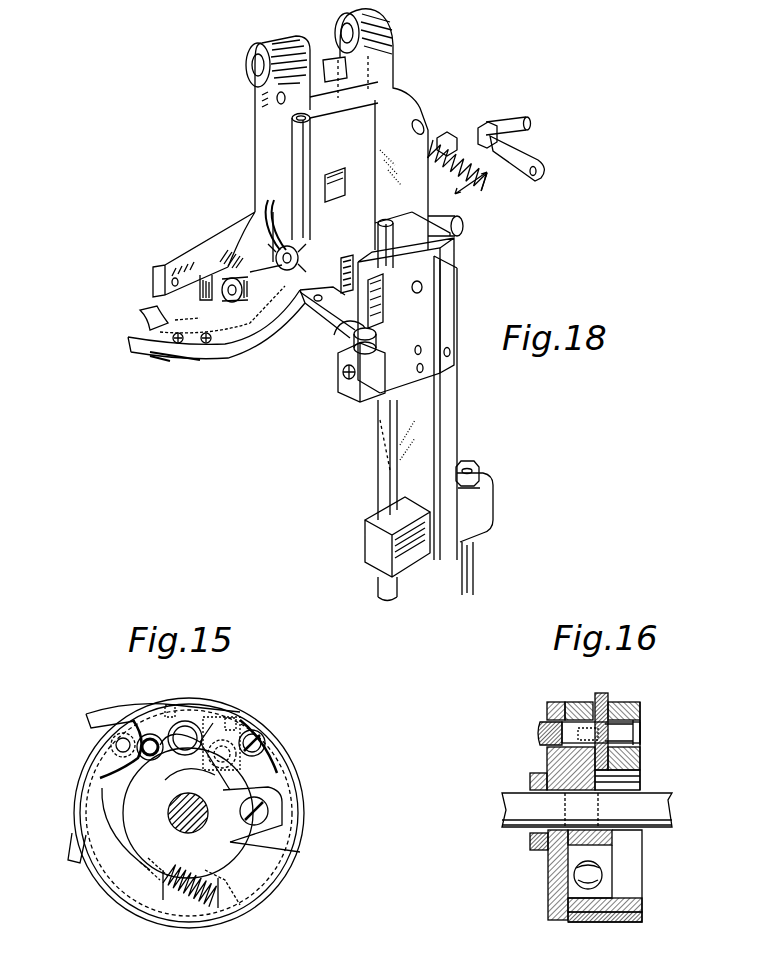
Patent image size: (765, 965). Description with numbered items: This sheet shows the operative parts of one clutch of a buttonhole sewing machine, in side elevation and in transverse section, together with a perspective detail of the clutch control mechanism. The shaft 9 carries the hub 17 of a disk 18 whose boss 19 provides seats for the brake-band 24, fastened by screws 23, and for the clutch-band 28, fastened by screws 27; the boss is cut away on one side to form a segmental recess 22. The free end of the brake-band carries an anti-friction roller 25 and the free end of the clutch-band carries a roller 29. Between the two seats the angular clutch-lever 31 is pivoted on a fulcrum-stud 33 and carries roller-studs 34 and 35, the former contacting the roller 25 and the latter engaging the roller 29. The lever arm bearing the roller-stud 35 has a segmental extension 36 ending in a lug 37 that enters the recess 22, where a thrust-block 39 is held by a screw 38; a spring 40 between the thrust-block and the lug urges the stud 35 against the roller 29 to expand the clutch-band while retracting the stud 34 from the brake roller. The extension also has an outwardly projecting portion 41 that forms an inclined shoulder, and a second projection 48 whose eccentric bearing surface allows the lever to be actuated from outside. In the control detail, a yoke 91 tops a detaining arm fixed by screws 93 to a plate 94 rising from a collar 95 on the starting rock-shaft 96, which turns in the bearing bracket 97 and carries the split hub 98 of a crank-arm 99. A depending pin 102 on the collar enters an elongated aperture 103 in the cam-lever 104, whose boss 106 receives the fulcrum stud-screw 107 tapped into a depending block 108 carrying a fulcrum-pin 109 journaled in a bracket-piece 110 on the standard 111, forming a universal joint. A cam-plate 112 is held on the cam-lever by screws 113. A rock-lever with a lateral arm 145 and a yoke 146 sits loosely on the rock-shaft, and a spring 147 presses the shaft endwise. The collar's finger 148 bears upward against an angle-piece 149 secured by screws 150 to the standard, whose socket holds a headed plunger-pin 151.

In FIG. 15, the shaft 9 is at (170, 806).
In FIG. 16, the shaft 9 is at (668, 800).
In FIG. 16, the hub 17 is at (530, 773).
In FIG. 15, the disk 18 is at (238, 912).
In FIG. 16, the disk 18 is at (550, 920).
In FIG. 15, the boss 19 is at (188, 813).
In FIG. 16, the boss 19 is at (640, 778).
In FIG. 15, the segmental recess 22 is at (190, 880).
In FIG. 15, the screws 23 is at (172, 706).
In FIG. 16, the brake-band 24 is at (590, 922).
In FIG. 15, the anti-friction roller 25 is at (264, 740).
In FIG. 15, the screws 27 is at (232, 716).
In FIG. 16, the clutch-band 28 is at (645, 918).
In FIG. 15, the anti-friction roller 29 is at (112, 745).
In FIG. 15, the clutch-lever 31 is at (170, 758).
In FIG. 15, the fulcrum-stud 33 is at (185, 738).
In FIG. 16, the fulcrum-stud 33 is at (625, 734).
In FIG. 15, the roller-stud 34 is at (232, 760).
In FIG. 15, the roller-stud 35 is at (145, 757).
In FIG. 15, the segmental extension 36 is at (126, 829).
In FIG. 15, the lug 37 is at (150, 866).
In FIG. 15, the screw 38 is at (243, 805).
In FIG. 15, the thrust-block 39 is at (262, 855).
In FIG. 16, the thrust-block 39 is at (589, 865).
In FIG. 15, the spring 40 is at (200, 902).
In FIG. 15, the outwardly projecting portion 41 is at (78, 863).
In FIG. 15, the outwardly projecting portion 48 is at (165, 702).
In FIG. 16, the outwardly projecting portion 48 is at (603, 696).
In FIG. 18, the yoke 91 is at (334, 76).
In FIG. 18, the screws 93 is at (312, 234).
In FIG. 18, the plate 94 is at (337, 185).
In FIG. 18, the collar 95 is at (318, 238).
In FIG. 18, the starting rock-shaft 96 is at (522, 118).
In FIG. 18, the bearing bracket 97 is at (381, 129).
In FIG. 18, the split hub 98 is at (488, 124).
In FIG. 18, the crank-arm 99 is at (522, 174).
In FIG. 18, the depending pin 102 is at (315, 305).
In FIG. 18, the elongated aperture 103 is at (322, 301).
In FIG. 18, the cam-lever 104 is at (222, 352).
In FIG. 18, the apertured boss 106 is at (378, 340).
In FIG. 18, the fulcrum stud-screw 107 is at (352, 342).
In FIG. 18, the depending block 108 is at (372, 393).
In FIG. 18, the fulcrum-pin 109 is at (345, 380).
In FIG. 18, the bracket-piece 110 is at (340, 368).
In FIG. 18, the standard 111 is at (458, 398).
In FIG. 18, the cam-plate 112 is at (178, 343).
In FIG. 18, the screws 113 is at (206, 343).
In FIG. 18, the lateral arm 145 is at (432, 204).
In FIG. 18, the yoke 146 is at (445, 140).
In FIG. 18, the spring 147 is at (457, 140).
In FIG. 18, the finger 148 is at (300, 305).
In FIG. 18, the angle-piece 149 is at (363, 262).
In FIG. 18, the screws 150 is at (417, 293).
In FIG. 18, the plunger-pin 151 is at (394, 258).